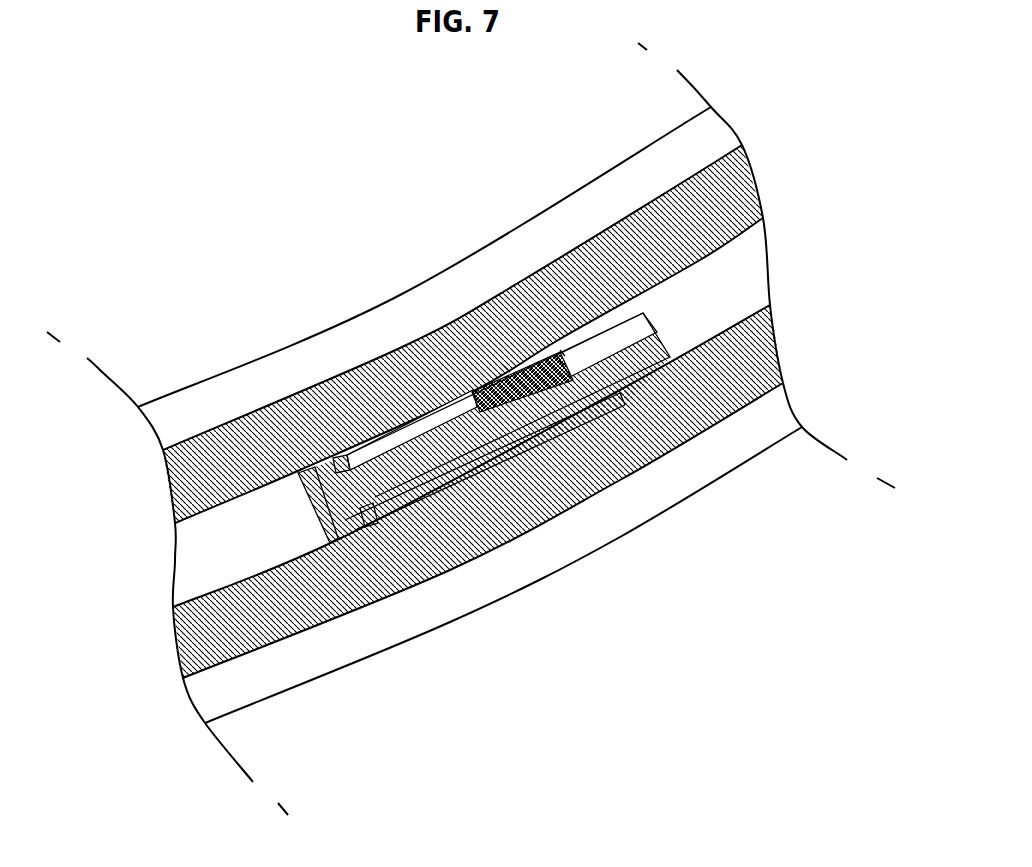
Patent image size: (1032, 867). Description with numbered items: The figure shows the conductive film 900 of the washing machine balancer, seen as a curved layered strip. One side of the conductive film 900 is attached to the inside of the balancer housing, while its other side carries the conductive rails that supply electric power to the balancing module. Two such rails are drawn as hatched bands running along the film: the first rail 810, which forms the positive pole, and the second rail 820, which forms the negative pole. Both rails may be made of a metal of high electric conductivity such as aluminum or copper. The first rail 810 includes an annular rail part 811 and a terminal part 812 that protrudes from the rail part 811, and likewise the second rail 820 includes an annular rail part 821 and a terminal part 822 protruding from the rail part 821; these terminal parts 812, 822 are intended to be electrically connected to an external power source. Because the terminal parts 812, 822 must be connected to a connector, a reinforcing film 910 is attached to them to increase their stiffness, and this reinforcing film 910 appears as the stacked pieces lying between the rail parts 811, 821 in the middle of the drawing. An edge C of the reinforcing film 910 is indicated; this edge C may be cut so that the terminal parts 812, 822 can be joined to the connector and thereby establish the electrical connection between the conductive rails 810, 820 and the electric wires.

The conductive film 900 is at (605, 190).
The reinforcing film 910 is at (503, 365).
The edge C is at (560, 350).
The second rail 820 is at (525, 352).
The rail part 821 is at (743, 175).
The terminal part 822 is at (647, 320).
The first rail 810 is at (487, 514).
The rail part 811 is at (582, 505).
The terminal part 812 is at (653, 363).